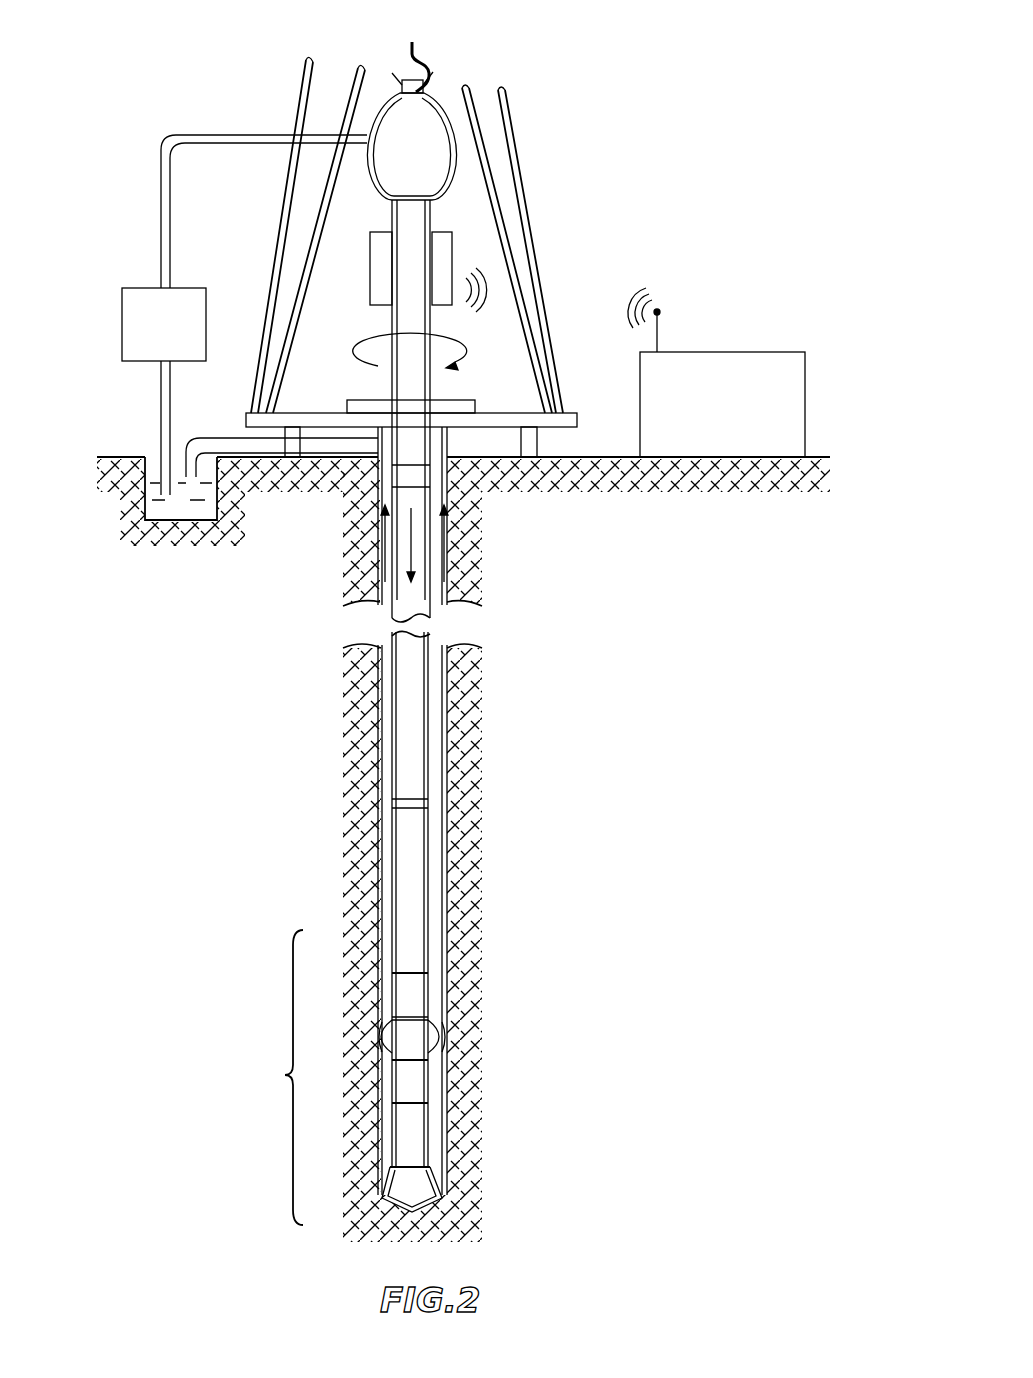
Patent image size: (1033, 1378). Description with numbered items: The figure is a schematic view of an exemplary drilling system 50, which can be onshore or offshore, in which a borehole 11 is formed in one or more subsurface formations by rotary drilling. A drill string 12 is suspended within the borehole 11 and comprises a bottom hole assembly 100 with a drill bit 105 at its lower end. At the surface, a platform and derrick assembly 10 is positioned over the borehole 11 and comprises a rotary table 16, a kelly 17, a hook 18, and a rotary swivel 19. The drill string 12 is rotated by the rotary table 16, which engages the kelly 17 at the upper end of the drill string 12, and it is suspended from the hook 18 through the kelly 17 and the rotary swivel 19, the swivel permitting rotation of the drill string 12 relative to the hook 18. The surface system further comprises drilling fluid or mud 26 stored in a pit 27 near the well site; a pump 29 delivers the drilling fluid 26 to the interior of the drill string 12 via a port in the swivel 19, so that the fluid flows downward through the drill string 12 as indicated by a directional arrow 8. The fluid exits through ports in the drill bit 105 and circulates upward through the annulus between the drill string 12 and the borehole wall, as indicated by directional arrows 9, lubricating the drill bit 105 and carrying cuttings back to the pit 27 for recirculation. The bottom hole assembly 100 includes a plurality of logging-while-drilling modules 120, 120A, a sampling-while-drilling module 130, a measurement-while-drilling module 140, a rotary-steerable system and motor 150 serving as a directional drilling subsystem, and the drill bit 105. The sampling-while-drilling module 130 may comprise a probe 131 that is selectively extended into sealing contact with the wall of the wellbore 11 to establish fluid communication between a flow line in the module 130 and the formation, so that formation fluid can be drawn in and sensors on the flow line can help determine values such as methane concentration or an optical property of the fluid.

The platform and derrick assembly 10 is at (548, 132).
The hook 18 is at (410, 43).
The rotary swivel 19 is at (398, 185).
The kelly 17 is at (403, 385).
The rotary table 16 is at (455, 403).
The drill string 12 is at (410, 455).
The borehole 11 is at (443, 458).
The directional arrows 9 is at (383, 532).
The directional arrow 8 is at (411, 540).
The pump 29 is at (132, 362).
The pit 27 is at (150, 455).
The drilling fluid or mud 26 is at (183, 520).
The drilling system 50 is at (783, 297).
The measurement-while-drilling (MWD) module 140 is at (415, 953).
The logging-while-drilling (LWD) module 120 is at (415, 995).
The probe 131 is at (450, 1035).
The sampling-while-drilling (SWD) module 130 is at (415, 1053).
The logging-while-drilling (LWD) module 120A is at (415, 1085).
The rotary-steerable system and motor 150 is at (415, 1130).
The drill bit 105 is at (413, 1183).
The bottom hole assembly 100 is at (285, 1075).